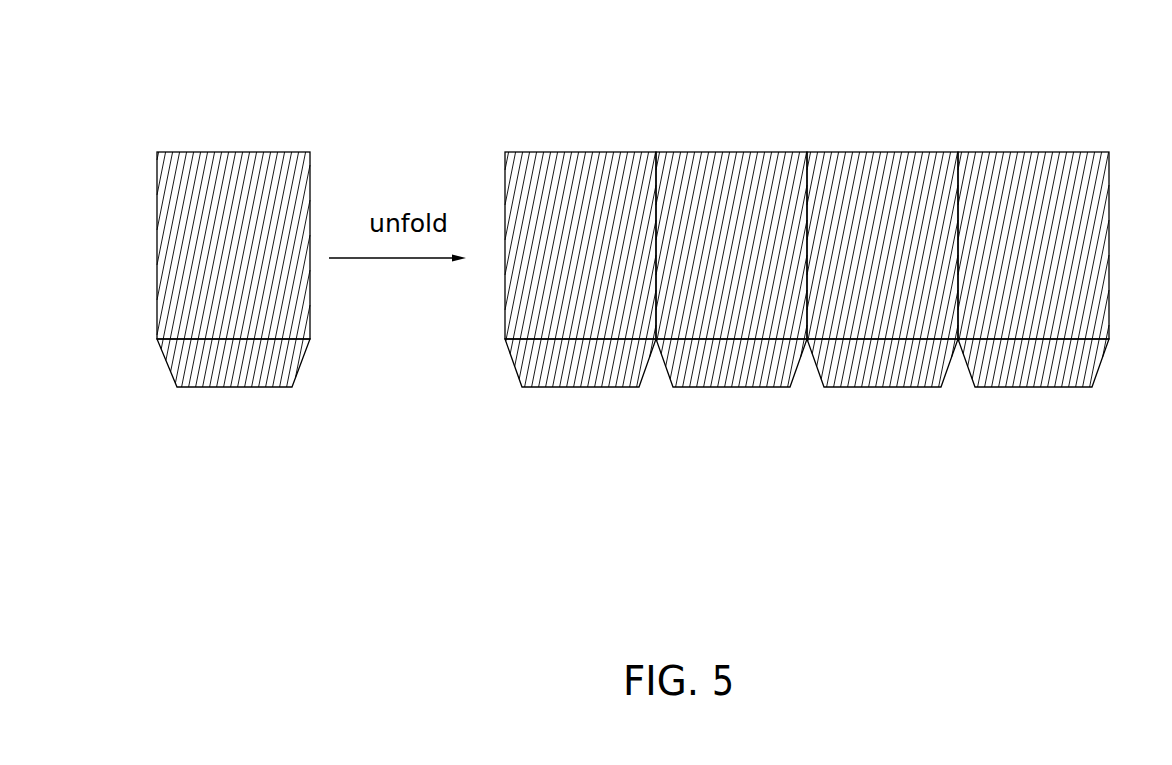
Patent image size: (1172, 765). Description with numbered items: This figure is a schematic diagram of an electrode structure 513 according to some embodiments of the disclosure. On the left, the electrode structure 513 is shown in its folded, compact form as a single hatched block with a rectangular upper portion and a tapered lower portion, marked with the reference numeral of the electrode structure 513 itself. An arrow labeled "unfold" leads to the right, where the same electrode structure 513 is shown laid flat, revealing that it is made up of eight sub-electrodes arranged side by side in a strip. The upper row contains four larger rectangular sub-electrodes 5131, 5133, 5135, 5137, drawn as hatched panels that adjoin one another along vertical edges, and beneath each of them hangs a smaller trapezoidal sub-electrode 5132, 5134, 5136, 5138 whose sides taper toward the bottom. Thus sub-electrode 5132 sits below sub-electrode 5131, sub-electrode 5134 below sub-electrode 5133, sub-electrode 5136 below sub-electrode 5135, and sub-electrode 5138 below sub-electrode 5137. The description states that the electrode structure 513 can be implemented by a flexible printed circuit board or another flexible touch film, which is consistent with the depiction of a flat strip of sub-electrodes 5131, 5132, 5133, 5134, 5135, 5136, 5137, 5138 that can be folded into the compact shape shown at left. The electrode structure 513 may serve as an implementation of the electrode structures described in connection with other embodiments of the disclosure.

The electrode structure 513 is at (133, 93).
The sub-electrode 5131 is at (613, 264).
The sub-electrode 5132 is at (613, 373).
The sub-electrode 5133 is at (731, 245).
The sub-electrode 5134 is at (731, 363).
The sub-electrode 5135 is at (882, 245).
The sub-electrode 5136 is at (882, 363).
The sub-electrode 5137 is at (1033, 245).
The sub-electrode 5138 is at (1033, 363).